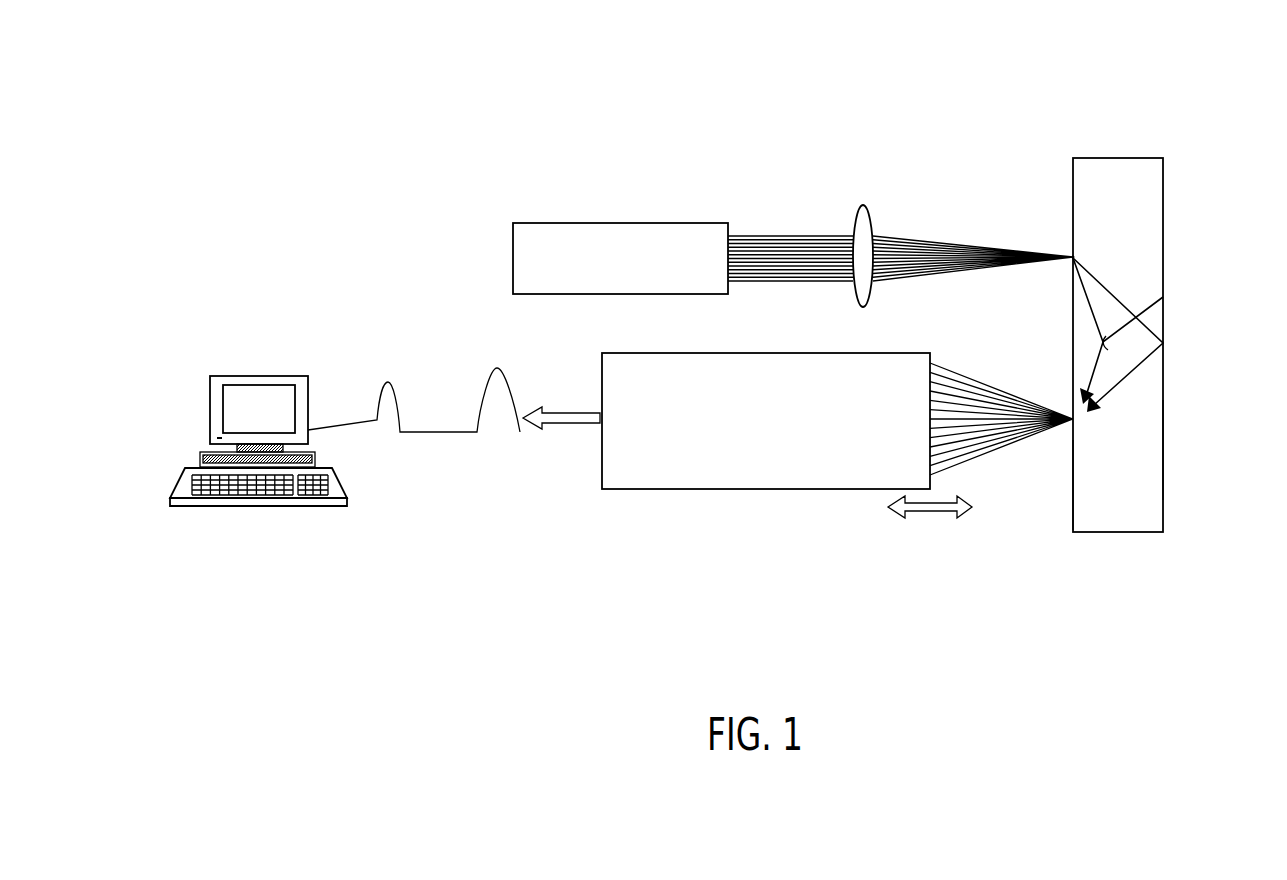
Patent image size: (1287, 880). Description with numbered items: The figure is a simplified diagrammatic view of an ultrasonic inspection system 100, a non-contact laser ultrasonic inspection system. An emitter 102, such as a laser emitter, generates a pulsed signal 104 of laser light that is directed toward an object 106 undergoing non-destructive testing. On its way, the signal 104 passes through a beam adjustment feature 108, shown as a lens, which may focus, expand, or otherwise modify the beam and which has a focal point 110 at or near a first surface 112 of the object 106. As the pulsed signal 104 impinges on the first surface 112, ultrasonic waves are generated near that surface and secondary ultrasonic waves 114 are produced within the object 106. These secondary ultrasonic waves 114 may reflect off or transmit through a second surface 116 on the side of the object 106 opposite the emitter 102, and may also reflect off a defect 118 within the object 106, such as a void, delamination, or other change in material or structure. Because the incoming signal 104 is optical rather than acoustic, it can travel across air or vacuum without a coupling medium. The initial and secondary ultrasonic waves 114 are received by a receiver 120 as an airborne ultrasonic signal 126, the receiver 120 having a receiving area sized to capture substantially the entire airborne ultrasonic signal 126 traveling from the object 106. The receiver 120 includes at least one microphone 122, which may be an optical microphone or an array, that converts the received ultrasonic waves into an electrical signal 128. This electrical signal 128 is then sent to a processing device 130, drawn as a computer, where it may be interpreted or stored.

The ultrasonic inspection system 100 is at (895, 82).
The emitter 102 is at (600, 240).
The signal 104 is at (802, 235).
The object 106 is at (1145, 176).
The beam adjustment feature 108 is at (870, 230).
The focal point 110 is at (1072, 257).
The first surface 112 is at (1073, 503).
The secondary ultrasonic waves 114 is at (1100, 283).
The second surface 116 is at (1163, 456).
The defect 118 is at (1106, 345).
The receiver 120 is at (675, 577).
The microphone 122 is at (640, 490).
The airborne ultrasonic signal 126 is at (1000, 437).
The electrical signal 128 is at (427, 432).
The processing device 130 is at (217, 376).